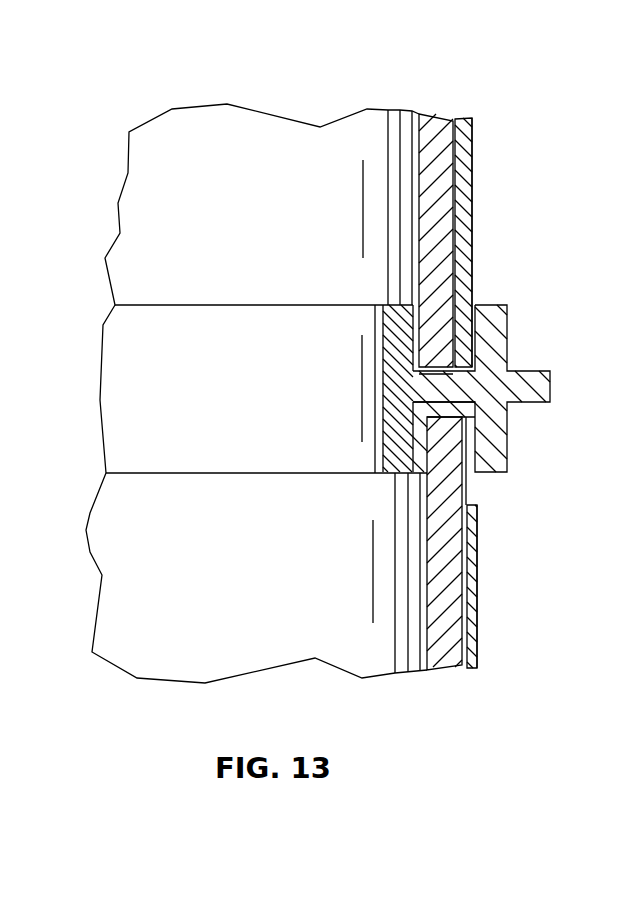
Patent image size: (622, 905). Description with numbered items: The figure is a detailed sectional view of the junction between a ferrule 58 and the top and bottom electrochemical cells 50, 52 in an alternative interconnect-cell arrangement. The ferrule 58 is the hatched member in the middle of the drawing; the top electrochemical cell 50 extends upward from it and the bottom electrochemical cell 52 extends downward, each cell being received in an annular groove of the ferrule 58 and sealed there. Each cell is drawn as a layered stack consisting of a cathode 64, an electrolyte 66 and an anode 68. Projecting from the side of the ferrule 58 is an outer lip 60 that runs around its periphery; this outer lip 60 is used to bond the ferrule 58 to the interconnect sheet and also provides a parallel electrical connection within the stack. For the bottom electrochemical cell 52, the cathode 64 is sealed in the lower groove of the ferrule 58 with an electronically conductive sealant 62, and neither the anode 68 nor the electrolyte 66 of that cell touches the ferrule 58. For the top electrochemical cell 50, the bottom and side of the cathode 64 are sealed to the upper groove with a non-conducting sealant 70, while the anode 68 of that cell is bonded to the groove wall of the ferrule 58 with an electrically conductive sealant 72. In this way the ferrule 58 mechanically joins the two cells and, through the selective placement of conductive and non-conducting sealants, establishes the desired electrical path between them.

The top electrochemical cell 50 is at (199, 118).
The bottom electrochemical cell 52 is at (172, 672).
The ferrule 58 is at (226, 300).
The outer lip 60 is at (537, 361).
The electronically conductive sealant 62 is at (468, 468).
The cathode 64 is at (430, 163).
The electrolyte 66 is at (458, 121).
The anode 68 is at (474, 167).
The non-conducting sealant 70 is at (415, 333).
The electrically conductive sealant 72 is at (474, 318).